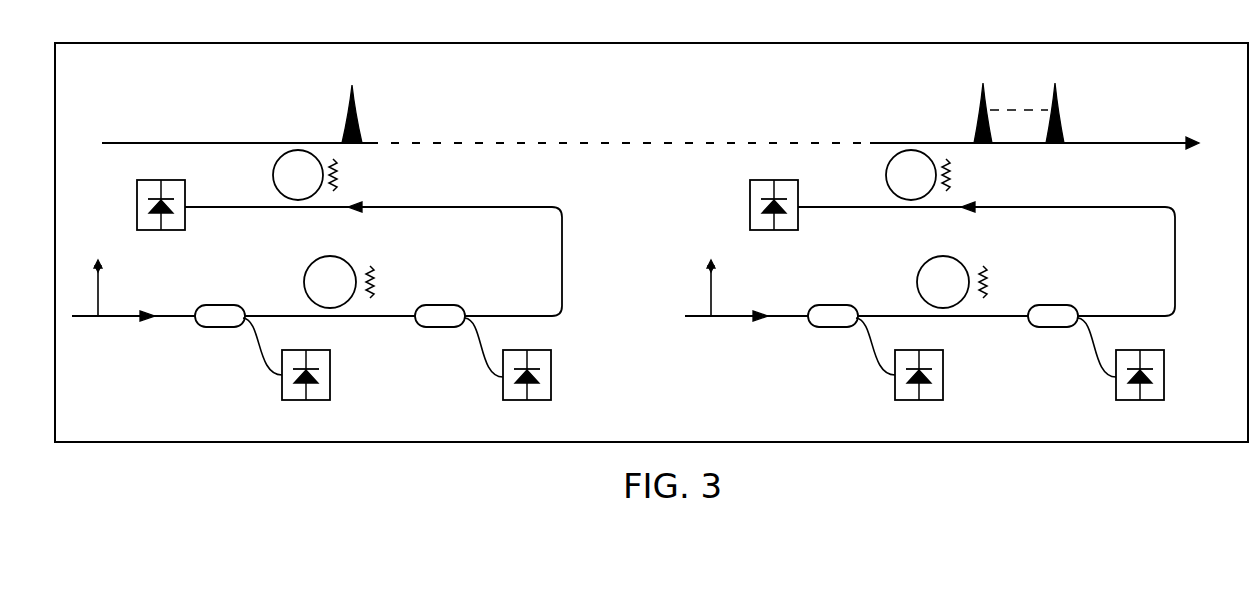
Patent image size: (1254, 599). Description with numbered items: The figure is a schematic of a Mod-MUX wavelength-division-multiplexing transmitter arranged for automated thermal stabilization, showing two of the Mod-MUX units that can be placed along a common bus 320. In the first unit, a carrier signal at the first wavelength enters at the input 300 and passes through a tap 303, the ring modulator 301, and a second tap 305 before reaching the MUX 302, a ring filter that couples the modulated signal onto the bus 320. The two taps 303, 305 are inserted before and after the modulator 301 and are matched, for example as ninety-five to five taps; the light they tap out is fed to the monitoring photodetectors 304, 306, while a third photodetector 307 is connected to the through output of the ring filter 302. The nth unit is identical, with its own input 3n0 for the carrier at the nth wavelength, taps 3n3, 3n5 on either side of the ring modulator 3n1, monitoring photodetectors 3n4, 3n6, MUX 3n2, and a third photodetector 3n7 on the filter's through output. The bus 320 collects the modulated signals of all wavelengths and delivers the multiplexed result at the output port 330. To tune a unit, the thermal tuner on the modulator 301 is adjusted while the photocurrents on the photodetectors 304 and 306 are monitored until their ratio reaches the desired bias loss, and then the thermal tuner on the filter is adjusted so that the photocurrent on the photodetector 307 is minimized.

The input 300 is at (101, 325).
The modulator 301 is at (360, 267).
The MUX 302 is at (313, 175).
The tap 303 is at (220, 296).
The photodetector 304 is at (318, 373).
The tap 305 is at (440, 296).
The photodetector 306 is at (541, 373).
The photodetector 307 is at (147, 227).
The bus 320 is at (158, 107).
The output port 330 is at (1155, 137).
The input 3n0 is at (714, 325).
The modulator 3n1 is at (970, 267).
The MUX 3n2 is at (923, 175).
The tap 3n3 is at (833, 296).
The photodetector 3n4 is at (931, 373).
The tap 3n5 is at (1053, 296).
The photodetector 3n6 is at (1154, 373).
The photodetector 3n7 is at (760, 227).